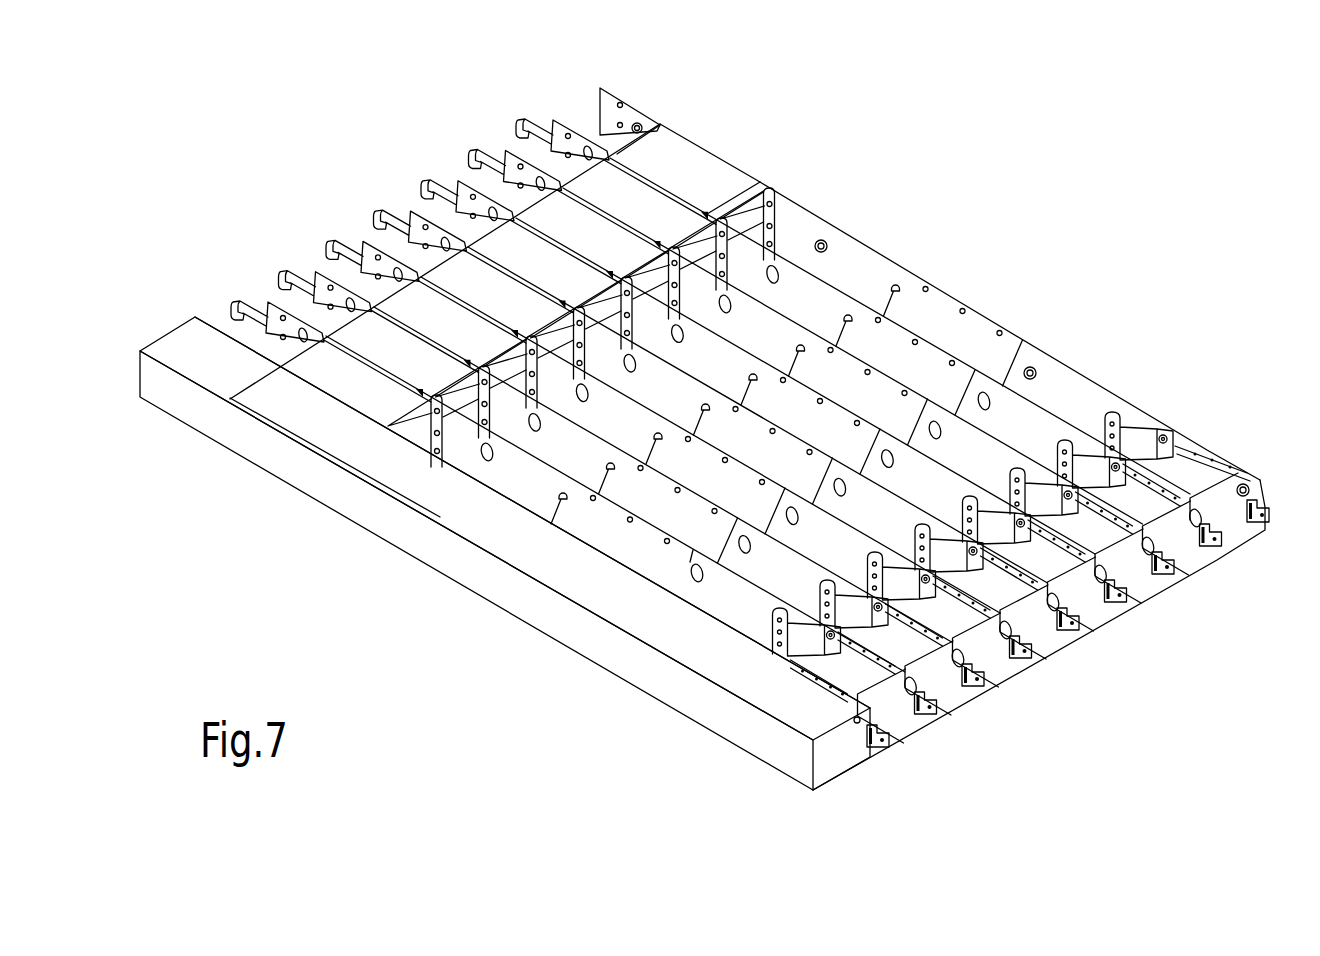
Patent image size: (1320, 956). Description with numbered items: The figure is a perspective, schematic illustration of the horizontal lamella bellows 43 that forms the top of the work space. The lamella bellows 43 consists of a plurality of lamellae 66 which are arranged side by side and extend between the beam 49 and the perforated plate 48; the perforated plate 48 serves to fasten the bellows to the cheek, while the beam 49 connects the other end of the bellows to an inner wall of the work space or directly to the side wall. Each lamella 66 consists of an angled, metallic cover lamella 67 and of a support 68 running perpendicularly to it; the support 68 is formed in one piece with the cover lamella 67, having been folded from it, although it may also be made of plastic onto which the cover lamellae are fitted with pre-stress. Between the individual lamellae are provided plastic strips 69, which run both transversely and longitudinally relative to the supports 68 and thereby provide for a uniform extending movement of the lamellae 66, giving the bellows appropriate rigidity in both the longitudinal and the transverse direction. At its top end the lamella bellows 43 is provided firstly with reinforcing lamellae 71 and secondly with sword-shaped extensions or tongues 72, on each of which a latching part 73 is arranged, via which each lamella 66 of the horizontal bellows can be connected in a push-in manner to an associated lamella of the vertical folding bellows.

The lamella bellows 43 is at (743, 436).
The perforated plate 48 is at (623, 108).
The beam 49 is at (722, 710).
The lamella 66 is at (968, 740).
The cover lamella 67 is at (995, 680).
The support 68 is at (1135, 565).
The plastic strip 69 is at (1140, 445).
The reinforcing lamella 71 is at (681, 166).
The sword-shaped extension 72 is at (580, 124).
The latching part 73 is at (430, 152).